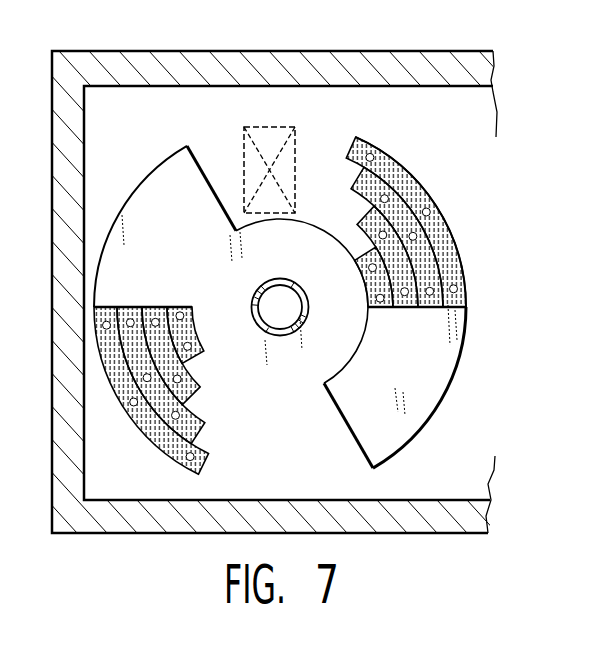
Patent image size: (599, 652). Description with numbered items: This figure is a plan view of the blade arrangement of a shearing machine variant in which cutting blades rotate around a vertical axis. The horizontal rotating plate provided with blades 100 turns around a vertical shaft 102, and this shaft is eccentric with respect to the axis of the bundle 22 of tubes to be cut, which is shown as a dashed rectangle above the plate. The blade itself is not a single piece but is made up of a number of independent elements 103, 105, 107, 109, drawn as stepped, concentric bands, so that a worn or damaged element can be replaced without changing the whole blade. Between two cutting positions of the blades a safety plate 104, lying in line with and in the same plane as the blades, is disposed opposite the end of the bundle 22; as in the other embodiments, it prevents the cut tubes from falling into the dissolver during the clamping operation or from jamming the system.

The bundle 22 is at (244, 133).
The rotating plate provided with blades 100 is at (308, 287).
The vertical shaft 102 is at (262, 300).
The blade element 103 is at (360, 142).
The safety plate 104 is at (418, 412).
The blade element 105 is at (400, 172).
The blade element 107 is at (388, 252).
The blade element 109 is at (373, 285).